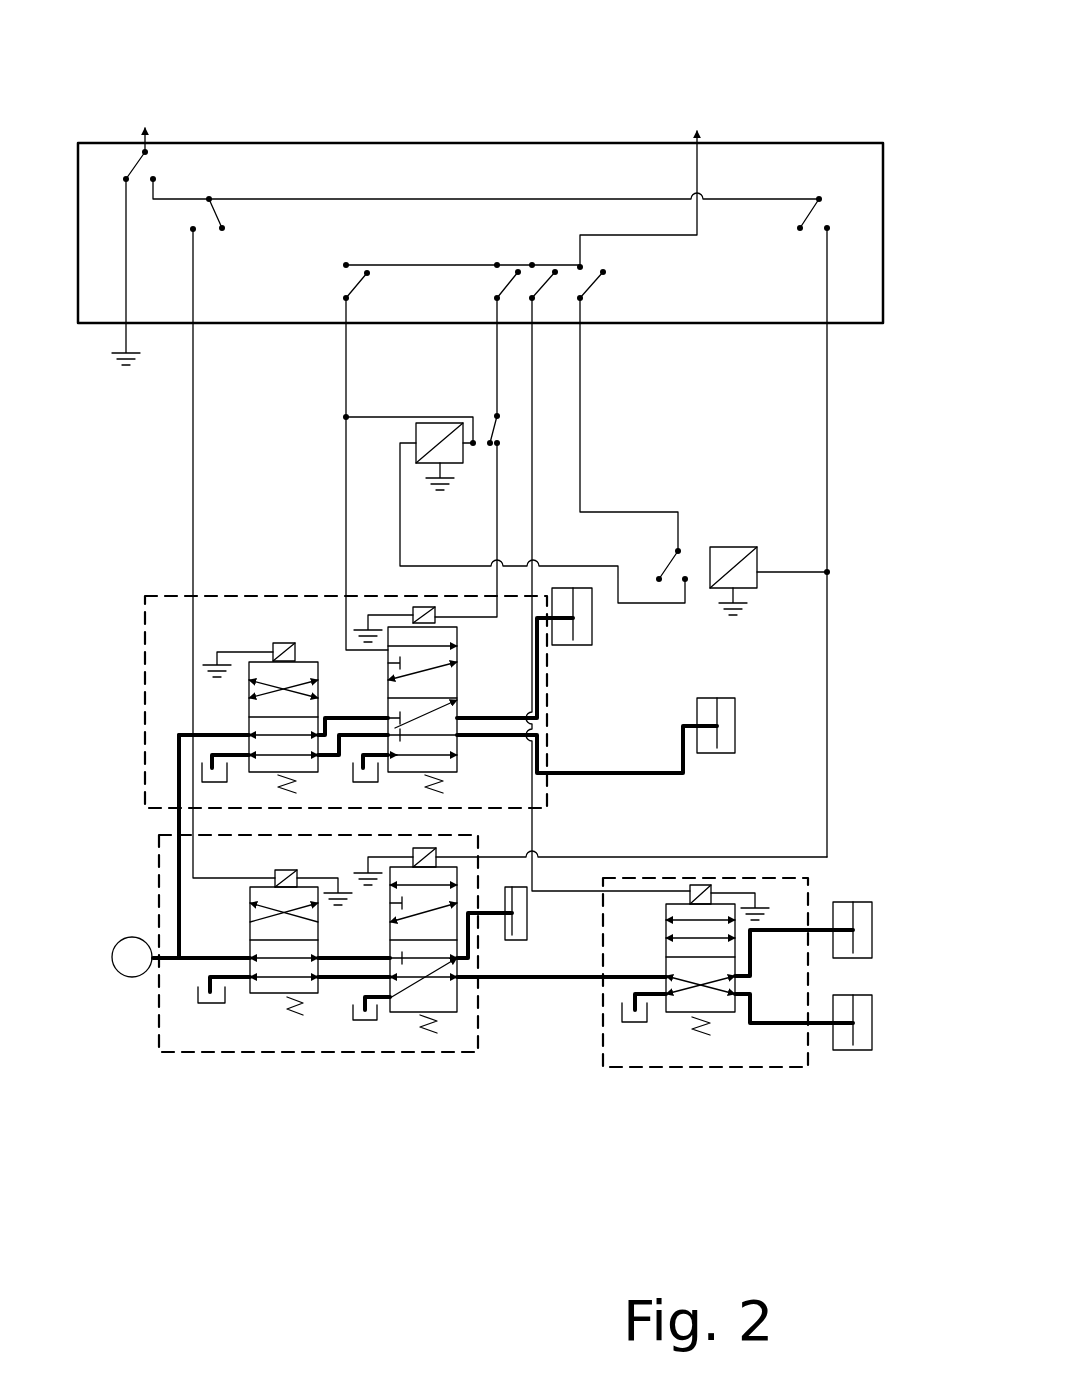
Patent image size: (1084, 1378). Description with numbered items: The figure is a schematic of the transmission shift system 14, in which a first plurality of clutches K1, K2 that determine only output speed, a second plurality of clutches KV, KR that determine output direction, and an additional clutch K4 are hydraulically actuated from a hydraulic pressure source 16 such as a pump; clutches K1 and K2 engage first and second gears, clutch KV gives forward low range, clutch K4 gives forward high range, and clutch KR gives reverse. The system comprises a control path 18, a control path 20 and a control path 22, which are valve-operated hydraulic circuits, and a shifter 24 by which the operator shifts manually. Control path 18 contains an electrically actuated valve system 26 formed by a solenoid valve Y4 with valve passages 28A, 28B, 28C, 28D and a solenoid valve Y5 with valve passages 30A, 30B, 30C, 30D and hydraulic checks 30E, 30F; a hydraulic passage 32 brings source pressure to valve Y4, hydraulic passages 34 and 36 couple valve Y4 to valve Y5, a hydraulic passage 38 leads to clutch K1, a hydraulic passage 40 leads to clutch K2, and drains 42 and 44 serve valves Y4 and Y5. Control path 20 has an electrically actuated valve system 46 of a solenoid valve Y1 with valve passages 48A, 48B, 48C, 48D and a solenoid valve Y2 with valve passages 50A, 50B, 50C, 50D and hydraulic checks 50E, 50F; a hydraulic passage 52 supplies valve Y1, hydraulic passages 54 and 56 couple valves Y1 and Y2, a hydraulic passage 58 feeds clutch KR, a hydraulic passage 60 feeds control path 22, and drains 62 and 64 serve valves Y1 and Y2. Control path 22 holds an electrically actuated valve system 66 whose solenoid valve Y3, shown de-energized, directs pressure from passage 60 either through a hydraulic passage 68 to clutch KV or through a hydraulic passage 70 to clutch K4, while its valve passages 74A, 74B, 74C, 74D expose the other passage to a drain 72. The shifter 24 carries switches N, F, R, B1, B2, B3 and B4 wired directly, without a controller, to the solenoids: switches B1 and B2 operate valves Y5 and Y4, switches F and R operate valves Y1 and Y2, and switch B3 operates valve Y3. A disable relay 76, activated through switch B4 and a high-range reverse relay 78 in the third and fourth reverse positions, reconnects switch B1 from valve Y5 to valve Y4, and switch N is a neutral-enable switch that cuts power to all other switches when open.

The transmission shift system 14 is at (497, 76).
The hydraulic pressure source 16 is at (132, 957).
The control path 18 is at (145, 617).
The control path 20 is at (157, 862).
The control path 22 is at (808, 880).
The shifter 24 is at (797, 143).
The electrically actuated valve system 26 is at (489, 736).
The valve passage 28A is at (262, 672).
The valve passage 28B is at (298, 670).
The valve passage 28C is at (215, 735).
The valve passage 28D is at (252, 768).
The valve passage 30A is at (403, 647).
The valve passage 30B is at (422, 680).
The valve passage 30C is at (437, 733).
The valve passage 30D is at (440, 765).
The hydraulic check 30E is at (400, 663).
The hydraulic check 30F is at (390, 753).
The hydraulic passage 32 is at (262, 733).
The hydraulic passage 34 is at (325, 720).
The hydraulic passage 36 is at (353, 762).
The hydraulic passage 38 is at (473, 708).
The hydraulic passage 40 is at (527, 742).
The drain 42 is at (198, 770).
The drain 44 is at (360, 792).
The electrically actuated valve system 46 is at (351, 1120).
The valve passage 48A is at (275, 880).
The valve passage 48B is at (250, 905).
The valve passage 48C is at (250, 957).
The valve passage 48D is at (248, 968).
The valve passage 50A is at (430, 850).
The valve passage 50B is at (457, 887).
The valve passage 50C is at (448, 982).
The valve passage 50D is at (392, 1007).
The hydraulic check 50E is at (393, 905).
The hydraulic check 50F is at (396, 958).
The hydraulic passage 52 is at (210, 957).
The hydraulic passage 54 is at (343, 962).
The hydraulic passage 56 is at (332, 980).
The hydraulic passage 58 is at (478, 935).
The hydraulic passage 60 is at (479, 984).
The drain 62 is at (208, 1005).
The drain 64 is at (354, 1024).
The electrically actuated valve system 66 is at (684, 1163).
The hydraulic passage 68 is at (792, 930).
The hydraulic passage 70 is at (800, 1024).
The drain 72 is at (637, 1024).
The valve passage 74A is at (690, 925).
The valve passage 74B is at (680, 950).
The valve passage 74C is at (724, 1012).
The valve passage 74D is at (687, 1014).
The disable relay 76 is at (416, 428).
The high-range reverse relay 78 is at (728, 547).
The neutral-enable switch N is at (110, 153).
The forward switch F is at (231, 206).
The reverse switch R is at (846, 206).
The switch B1 is at (497, 248).
The switch B2 is at (311, 278).
The switch B3 is at (533, 248).
The switch B4 is at (611, 292).
The solenoid valve Y1 is at (247, 992).
The solenoid valve Y2 is at (355, 1012).
The solenoid valve Y3 is at (703, 885).
The solenoid valve Y4 is at (249, 690).
The solenoid valve Y5 is at (387, 650).
The clutch K1 is at (592, 622).
The clutch K2 is at (735, 720).
The clutch K4 is at (875, 1018).
The clutch KV is at (875, 925).
The clutch KR is at (599, 998).